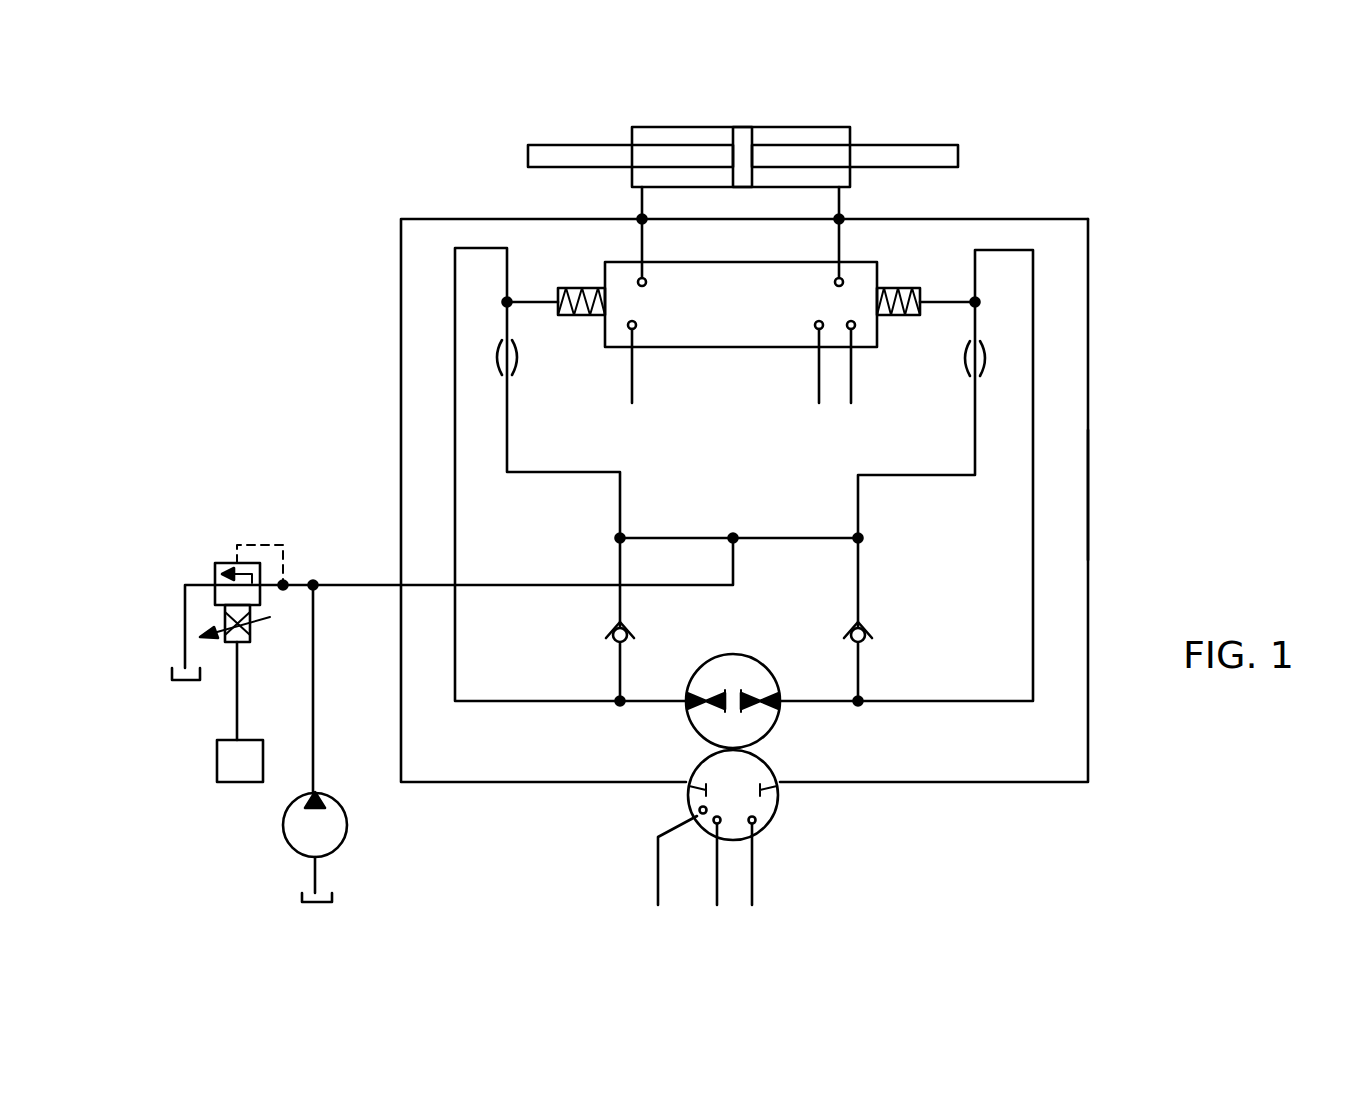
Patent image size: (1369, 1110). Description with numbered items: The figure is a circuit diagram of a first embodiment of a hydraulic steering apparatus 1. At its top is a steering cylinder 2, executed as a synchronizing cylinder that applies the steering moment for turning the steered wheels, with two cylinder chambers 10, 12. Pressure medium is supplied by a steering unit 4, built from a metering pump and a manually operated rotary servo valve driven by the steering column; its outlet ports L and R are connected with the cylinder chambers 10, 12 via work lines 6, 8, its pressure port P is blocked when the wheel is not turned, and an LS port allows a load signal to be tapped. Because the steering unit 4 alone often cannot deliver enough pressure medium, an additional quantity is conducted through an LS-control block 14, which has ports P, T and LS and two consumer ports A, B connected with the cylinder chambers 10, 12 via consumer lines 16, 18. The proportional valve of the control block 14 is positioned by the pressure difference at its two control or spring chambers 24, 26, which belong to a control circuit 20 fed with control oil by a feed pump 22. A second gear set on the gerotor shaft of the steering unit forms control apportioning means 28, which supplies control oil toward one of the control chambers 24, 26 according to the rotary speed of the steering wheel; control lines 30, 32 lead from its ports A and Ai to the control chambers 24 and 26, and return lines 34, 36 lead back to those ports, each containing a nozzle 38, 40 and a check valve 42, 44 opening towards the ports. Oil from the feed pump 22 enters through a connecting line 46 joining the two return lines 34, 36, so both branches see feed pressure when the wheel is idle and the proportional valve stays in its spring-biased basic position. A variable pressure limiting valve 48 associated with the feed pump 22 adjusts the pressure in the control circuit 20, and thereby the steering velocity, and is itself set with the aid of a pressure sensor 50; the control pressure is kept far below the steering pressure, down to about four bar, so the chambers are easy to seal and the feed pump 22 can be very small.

The steering apparatus 1 is at (1133, 195).
The steering cylinder 2 is at (781, 128).
The steering unit 4 is at (770, 817).
The work line 6 is at (400, 420).
The work line 8 is at (1090, 402).
The cylinder chamber 10 is at (665, 130).
The cylinder chamber 12 is at (826, 135).
The LS-control block 14 is at (742, 314).
The consumer line 16 is at (648, 240).
The consumer line 18 is at (836, 241).
The control circuit 20 is at (1042, 484).
The feed pump 22 is at (328, 832).
The control chamber 24 is at (575, 318).
The control chamber 26 is at (902, 318).
The control apportioning means 28 is at (742, 678).
The control line 30 is at (488, 702).
The control line 32 is at (948, 703).
The return line 34 is at (622, 491).
The return line 36 is at (856, 500).
The nozzle 38 is at (495, 352).
The nozzle 40 is at (985, 357).
The check valve 42 is at (607, 628).
The check valve 44 is at (868, 630).
The connecting line 46 is at (818, 539).
The pressure limiting valve 48 is at (225, 565).
The pressure sensor 50 is at (243, 770).